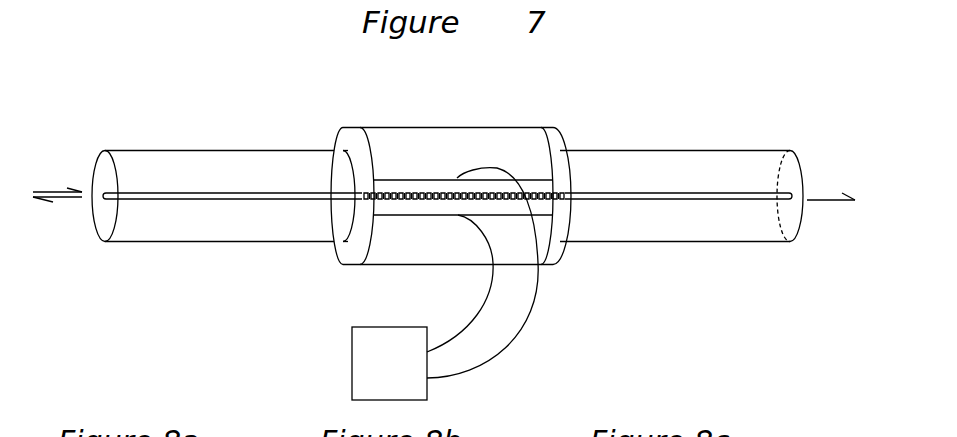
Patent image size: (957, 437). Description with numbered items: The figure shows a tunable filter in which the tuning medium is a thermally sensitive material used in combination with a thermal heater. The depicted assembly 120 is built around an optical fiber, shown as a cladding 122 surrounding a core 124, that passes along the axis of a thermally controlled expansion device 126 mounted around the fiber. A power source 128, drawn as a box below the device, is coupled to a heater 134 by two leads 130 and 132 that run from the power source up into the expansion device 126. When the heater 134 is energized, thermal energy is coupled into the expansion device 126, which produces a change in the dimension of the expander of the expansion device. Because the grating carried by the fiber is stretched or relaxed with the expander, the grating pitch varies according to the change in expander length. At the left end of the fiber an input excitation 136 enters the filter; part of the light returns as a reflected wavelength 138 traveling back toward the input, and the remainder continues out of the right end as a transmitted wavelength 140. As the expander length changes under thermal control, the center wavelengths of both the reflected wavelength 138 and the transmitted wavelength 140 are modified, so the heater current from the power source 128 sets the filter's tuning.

The optical fiber device 120 is at (218, 130).
The optical fiber cladding 122 is at (203, 243).
The fiber core 124 is at (173, 187).
The thermally controlled expansion device 126 is at (344, 126).
The power source 128 is at (389, 363).
The lead 130 is at (469, 306).
The lead 132 is at (508, 357).
The heater 134 is at (524, 127).
The input excitation 136 is at (77, 187).
The reflected wavelength 138 is at (57, 224).
The transmitted wavelength 140 is at (830, 173).